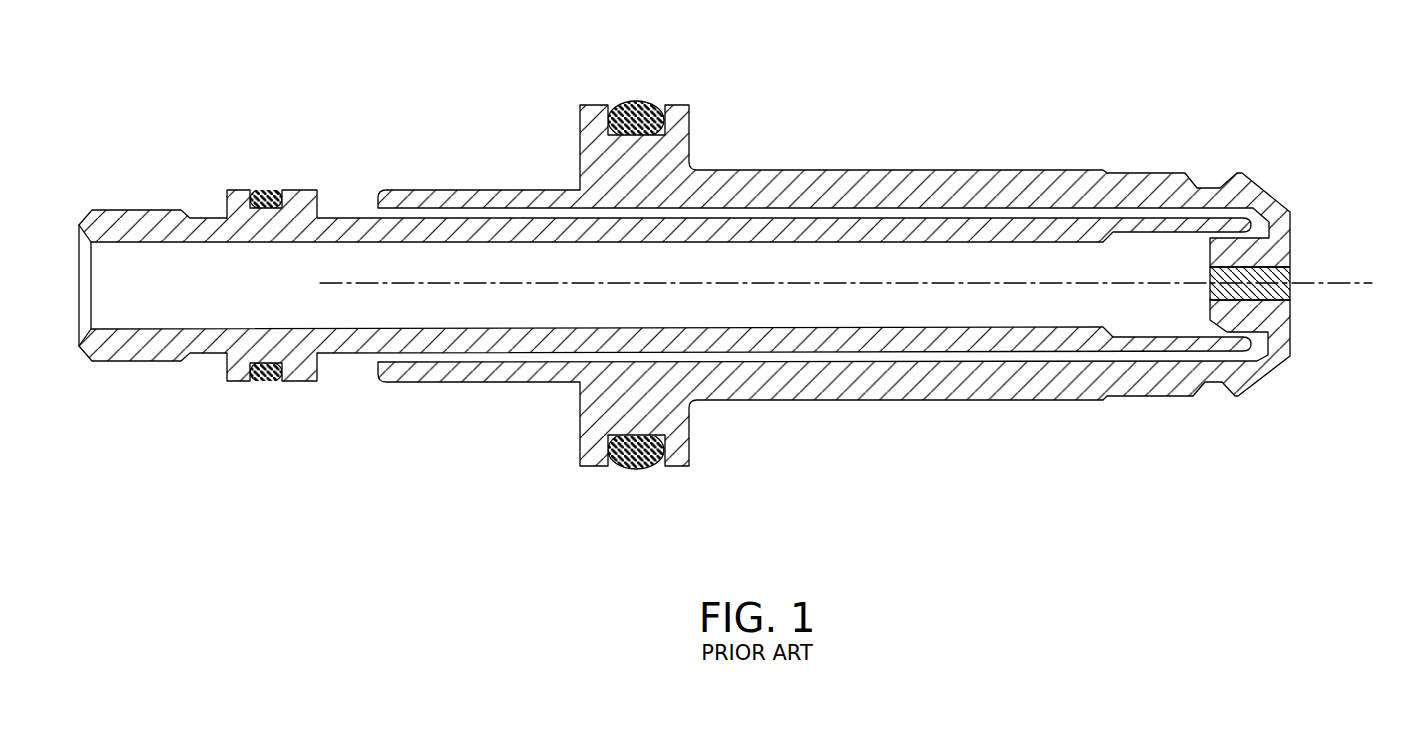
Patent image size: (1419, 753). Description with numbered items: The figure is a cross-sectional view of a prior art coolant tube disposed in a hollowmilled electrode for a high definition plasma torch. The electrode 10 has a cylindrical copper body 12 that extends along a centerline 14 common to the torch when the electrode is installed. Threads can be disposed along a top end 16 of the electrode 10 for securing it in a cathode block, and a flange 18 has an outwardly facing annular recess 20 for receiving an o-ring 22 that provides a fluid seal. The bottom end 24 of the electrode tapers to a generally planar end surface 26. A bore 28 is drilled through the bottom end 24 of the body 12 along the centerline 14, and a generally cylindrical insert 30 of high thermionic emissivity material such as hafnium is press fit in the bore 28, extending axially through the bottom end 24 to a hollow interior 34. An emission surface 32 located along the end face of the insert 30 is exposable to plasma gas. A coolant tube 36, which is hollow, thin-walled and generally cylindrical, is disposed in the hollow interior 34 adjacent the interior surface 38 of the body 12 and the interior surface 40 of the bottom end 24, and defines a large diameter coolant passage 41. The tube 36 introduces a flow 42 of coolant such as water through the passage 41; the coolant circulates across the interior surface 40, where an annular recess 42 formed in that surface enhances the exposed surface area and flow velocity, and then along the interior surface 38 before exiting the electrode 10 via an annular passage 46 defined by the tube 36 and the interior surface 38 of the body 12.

The electrode 10 is at (772, 70).
The cylindrical copper body 12 is at (745, 401).
The centerline 14 is at (1360, 282).
The top end 16 is at (434, 383).
The flange 18 is at (580, 466).
The outwardly facing annular recess 20 is at (606, 433).
The o-ring 22 is at (633, 472).
The bottom end 24 is at (1273, 378).
The end surface 26 is at (1290, 224).
The bore 28 is at (1262, 300).
The insert 30 is at (1280, 293).
The emission surface 32 is at (1290, 276).
The hollow interior 34 is at (1183, 212).
The coolant tube 36 is at (348, 205).
The interior surface of the body 38 is at (802, 207).
The interior surface of the bottom end 40 is at (1219, 240).
The coolant passage 41 is at (585, 273).
The coolant flow 42 is at (205, 285).
The annular passage 46 is at (1060, 356).